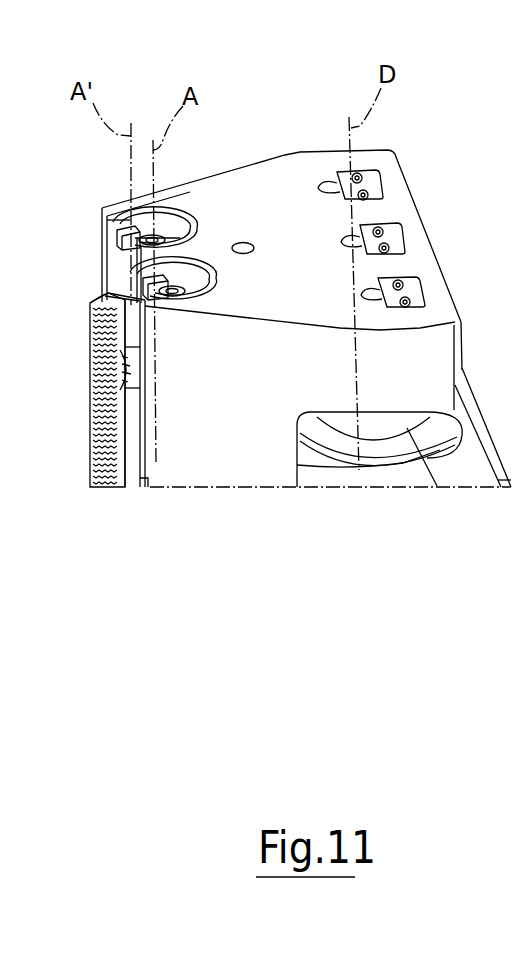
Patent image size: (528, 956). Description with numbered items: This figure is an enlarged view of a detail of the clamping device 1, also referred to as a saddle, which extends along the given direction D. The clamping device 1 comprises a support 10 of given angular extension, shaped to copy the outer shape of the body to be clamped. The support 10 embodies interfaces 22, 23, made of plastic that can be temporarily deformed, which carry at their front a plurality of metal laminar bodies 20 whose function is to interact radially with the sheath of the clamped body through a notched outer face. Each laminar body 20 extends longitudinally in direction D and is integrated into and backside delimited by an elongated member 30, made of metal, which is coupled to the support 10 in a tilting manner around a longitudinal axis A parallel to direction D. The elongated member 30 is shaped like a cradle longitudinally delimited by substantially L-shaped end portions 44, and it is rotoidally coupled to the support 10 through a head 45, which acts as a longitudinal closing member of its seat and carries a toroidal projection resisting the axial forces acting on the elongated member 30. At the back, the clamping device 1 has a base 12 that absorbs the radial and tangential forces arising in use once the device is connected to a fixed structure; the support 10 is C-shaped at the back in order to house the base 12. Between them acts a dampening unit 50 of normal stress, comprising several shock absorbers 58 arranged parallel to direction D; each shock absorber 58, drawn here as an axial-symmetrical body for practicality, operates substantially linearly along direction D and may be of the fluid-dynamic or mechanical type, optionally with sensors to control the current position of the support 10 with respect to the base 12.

The clamping device 1 is at (432, 93).
The support 10 is at (260, 415).
The base 12 is at (460, 468).
The laminar bodies 20 is at (90, 318).
The interface 22 is at (90, 343).
The interface 23 is at (143, 487).
The elongated member 30 is at (97, 380).
The end portion 44 is at (110, 280).
The head 45 is at (208, 222).
The dampening unit 50 is at (470, 417).
The shock absorber 58 is at (411, 460).